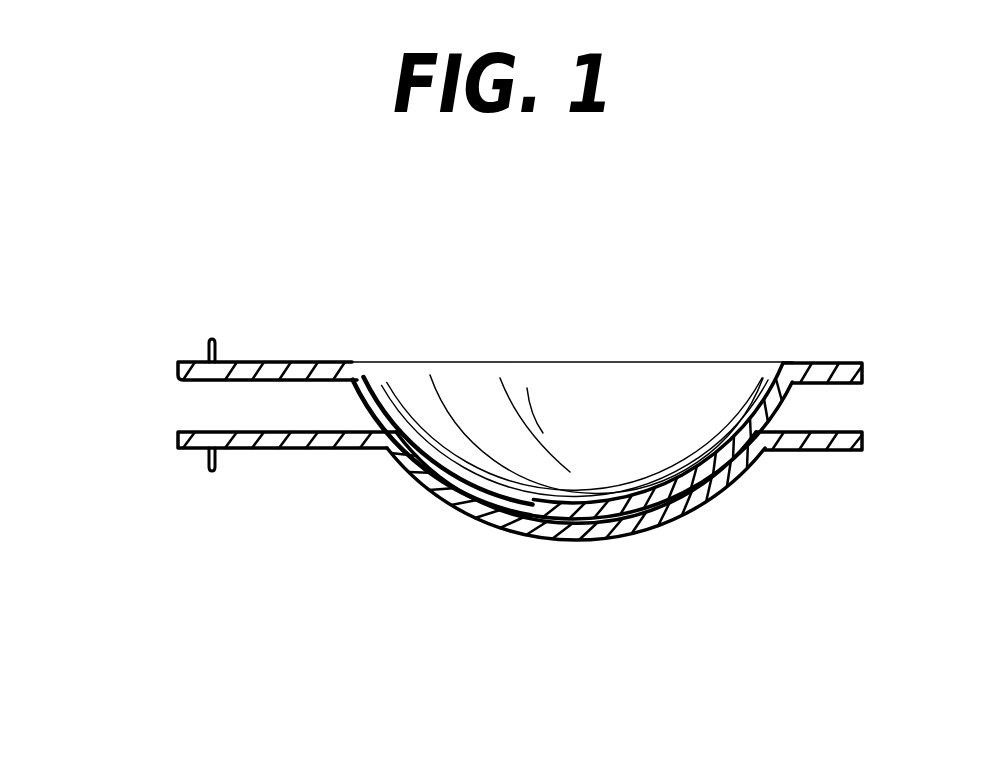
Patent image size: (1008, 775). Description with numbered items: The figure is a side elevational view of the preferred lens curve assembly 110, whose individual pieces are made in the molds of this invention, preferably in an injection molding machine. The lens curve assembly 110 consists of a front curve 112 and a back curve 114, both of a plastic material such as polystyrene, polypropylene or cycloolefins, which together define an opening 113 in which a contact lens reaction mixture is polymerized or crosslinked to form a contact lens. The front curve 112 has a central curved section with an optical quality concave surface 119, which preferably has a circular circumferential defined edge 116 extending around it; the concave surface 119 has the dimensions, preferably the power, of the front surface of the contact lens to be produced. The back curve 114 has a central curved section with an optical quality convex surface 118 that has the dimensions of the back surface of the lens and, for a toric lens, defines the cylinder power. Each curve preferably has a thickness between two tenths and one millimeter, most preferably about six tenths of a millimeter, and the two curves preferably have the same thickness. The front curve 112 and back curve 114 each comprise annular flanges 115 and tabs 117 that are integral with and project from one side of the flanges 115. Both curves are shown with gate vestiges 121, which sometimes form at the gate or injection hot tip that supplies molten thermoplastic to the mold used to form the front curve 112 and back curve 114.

The lens curve assembly 110 is at (115, 320).
The front curve 112 is at (447, 508).
The opening 113 is at (657, 532).
The back curve 114 is at (663, 345).
The annular flanges 115 is at (818, 372).
The circumferential defined edge 116 is at (737, 413).
The tabs 117 is at (267, 360).
The convex surface 118 is at (497, 523).
The concave surface 119 is at (552, 522).
The gate vestiges 121 is at (213, 337).